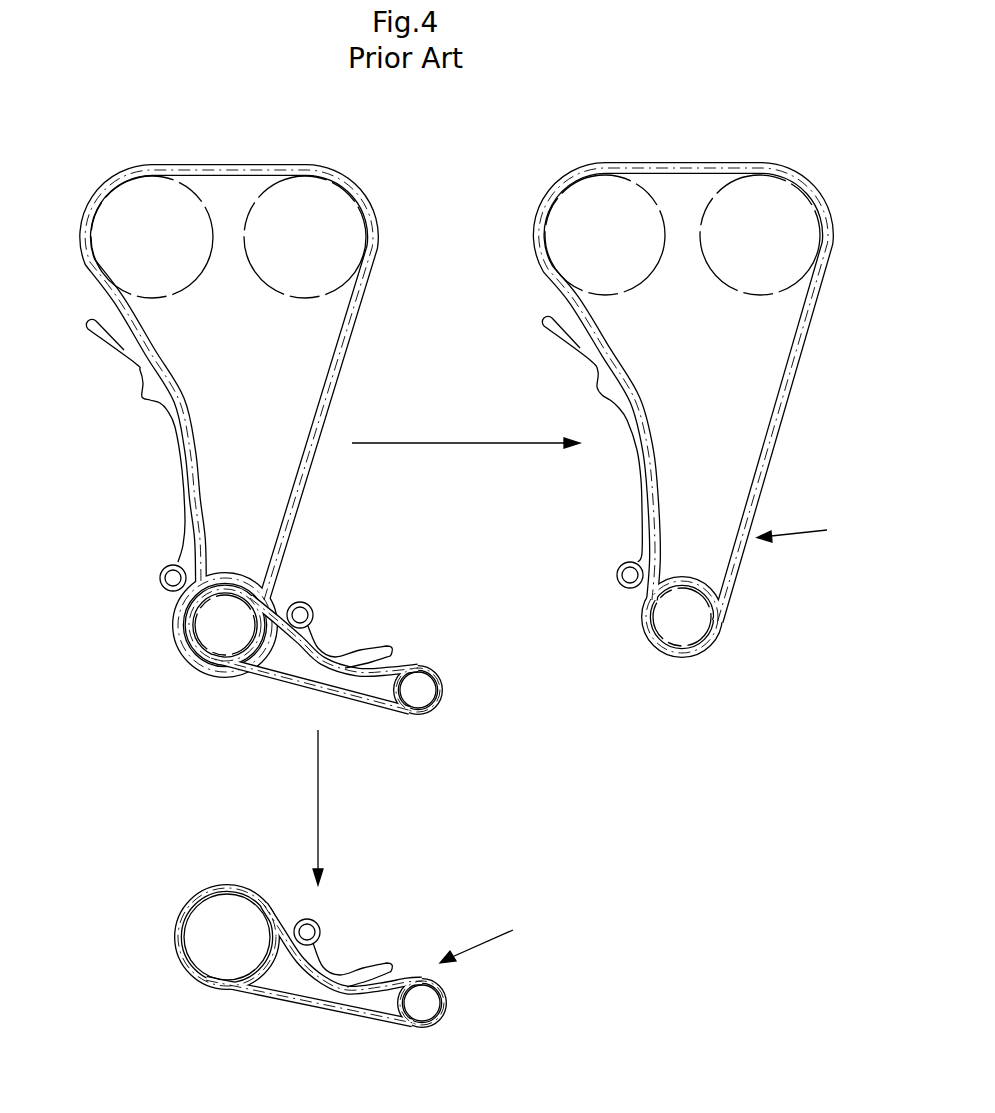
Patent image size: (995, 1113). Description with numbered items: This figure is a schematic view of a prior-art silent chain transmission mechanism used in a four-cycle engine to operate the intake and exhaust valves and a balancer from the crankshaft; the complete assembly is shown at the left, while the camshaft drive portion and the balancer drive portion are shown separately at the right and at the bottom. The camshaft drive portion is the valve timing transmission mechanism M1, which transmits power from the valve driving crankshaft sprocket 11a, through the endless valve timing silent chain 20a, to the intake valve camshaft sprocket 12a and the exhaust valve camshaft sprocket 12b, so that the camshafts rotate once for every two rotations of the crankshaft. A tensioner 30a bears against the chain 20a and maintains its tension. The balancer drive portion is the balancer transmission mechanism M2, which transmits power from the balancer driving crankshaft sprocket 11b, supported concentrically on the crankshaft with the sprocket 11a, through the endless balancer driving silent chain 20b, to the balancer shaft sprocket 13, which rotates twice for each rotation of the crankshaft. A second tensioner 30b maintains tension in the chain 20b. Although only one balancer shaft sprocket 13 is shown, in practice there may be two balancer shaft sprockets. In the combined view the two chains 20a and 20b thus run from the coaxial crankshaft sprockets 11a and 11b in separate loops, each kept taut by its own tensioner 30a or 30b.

The intake valve camshaft sprocket 12a is at (127, 200).
The exhaust valve camshaft sprocket 12b is at (300, 200).
The valve driving crankshaft sprocket 11a is at (217, 631).
The balancer driving crankshaft sprocket 11b is at (182, 626).
The balancer shaft sprocket 13 is at (425, 690).
The valve timing silent chain 20a is at (352, 353).
The balancer driving silent chain 20b is at (290, 690).
The tensioner 30a is at (148, 395).
The tensioner 30b is at (330, 652).
The valve timing transmission mechanism M1 is at (811, 533).
The balancer transmission mechanism M2 is at (495, 942).